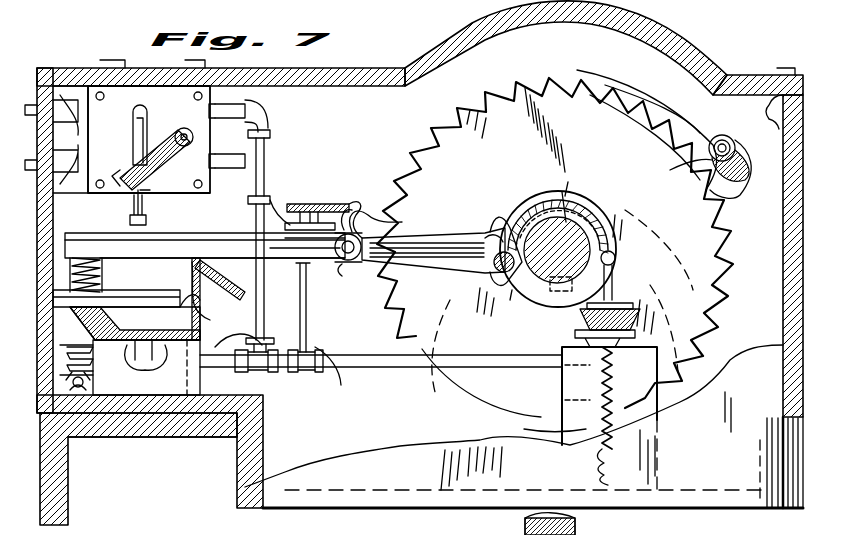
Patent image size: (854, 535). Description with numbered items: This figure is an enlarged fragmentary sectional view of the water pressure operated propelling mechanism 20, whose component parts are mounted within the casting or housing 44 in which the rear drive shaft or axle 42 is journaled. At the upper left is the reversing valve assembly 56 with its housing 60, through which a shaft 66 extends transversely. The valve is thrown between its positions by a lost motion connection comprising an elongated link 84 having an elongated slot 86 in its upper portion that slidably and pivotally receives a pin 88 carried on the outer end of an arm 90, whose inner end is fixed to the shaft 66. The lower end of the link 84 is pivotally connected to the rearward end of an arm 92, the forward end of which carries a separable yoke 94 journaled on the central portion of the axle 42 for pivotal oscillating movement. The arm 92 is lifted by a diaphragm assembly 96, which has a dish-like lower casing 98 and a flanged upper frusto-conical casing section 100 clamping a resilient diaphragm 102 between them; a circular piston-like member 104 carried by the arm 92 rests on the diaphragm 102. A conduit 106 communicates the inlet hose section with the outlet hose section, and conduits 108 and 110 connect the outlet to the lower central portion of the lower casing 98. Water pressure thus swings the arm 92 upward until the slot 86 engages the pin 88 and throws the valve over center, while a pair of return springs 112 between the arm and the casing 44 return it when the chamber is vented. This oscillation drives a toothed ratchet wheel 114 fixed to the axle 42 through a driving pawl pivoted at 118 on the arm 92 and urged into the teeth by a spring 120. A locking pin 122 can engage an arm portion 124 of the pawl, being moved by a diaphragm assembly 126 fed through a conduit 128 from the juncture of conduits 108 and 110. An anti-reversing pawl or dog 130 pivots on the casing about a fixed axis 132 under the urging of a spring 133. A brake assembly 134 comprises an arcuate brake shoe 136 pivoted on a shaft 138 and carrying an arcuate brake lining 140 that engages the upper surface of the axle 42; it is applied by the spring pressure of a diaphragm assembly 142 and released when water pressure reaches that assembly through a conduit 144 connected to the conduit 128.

The propelling mechanism 20 is at (400, 62).
The drive shaft or axle 42 is at (535, 187).
The casting or housing 44 is at (240, 482).
The reversing valve assembly 56 is at (128, 64).
The housing 60 is at (145, 100).
The shaft 66 is at (256, 128).
The link 84 is at (132, 214).
The slot 86 is at (145, 120).
The pin 88 is at (148, 162).
The arm 90 is at (162, 140).
The arm 92 is at (110, 234).
The separable yoke 94 is at (615, 285).
The diaphragm assembly 96 is at (251, 291).
The lower casing 98 is at (247, 364).
The upper frusto-conical casing section 100 is at (160, 288).
The resilient diaphragm 102 is at (130, 367).
The circular piston-like member 104 is at (200, 258).
The conduit 106 is at (272, 140).
The conduit 108 is at (268, 215).
The conduit 110 is at (162, 439).
The return springs 112 is at (78, 385).
The toothed ratchet wheel 114 is at (568, 66).
The pivot 118 is at (395, 258).
The spring 120 is at (402, 222).
The locking pin 122 is at (353, 190).
The arm portion 124 is at (326, 195).
The diaphragm assembly 126 is at (362, 274).
The conduit 128 is at (345, 362).
The anti-reversing pawl or dog 130 is at (677, 116).
The fixed axis 132 is at (583, 192).
The spring 133 is at (716, 191).
The brake assembly 134 is at (499, 140).
The arcuate brake shoe 136 is at (575, 190).
The shaft 138 is at (512, 270).
The arcuate brake lining 140 is at (590, 210).
The diaphragm assembly 142 is at (642, 311).
The conduit 144 is at (440, 362).